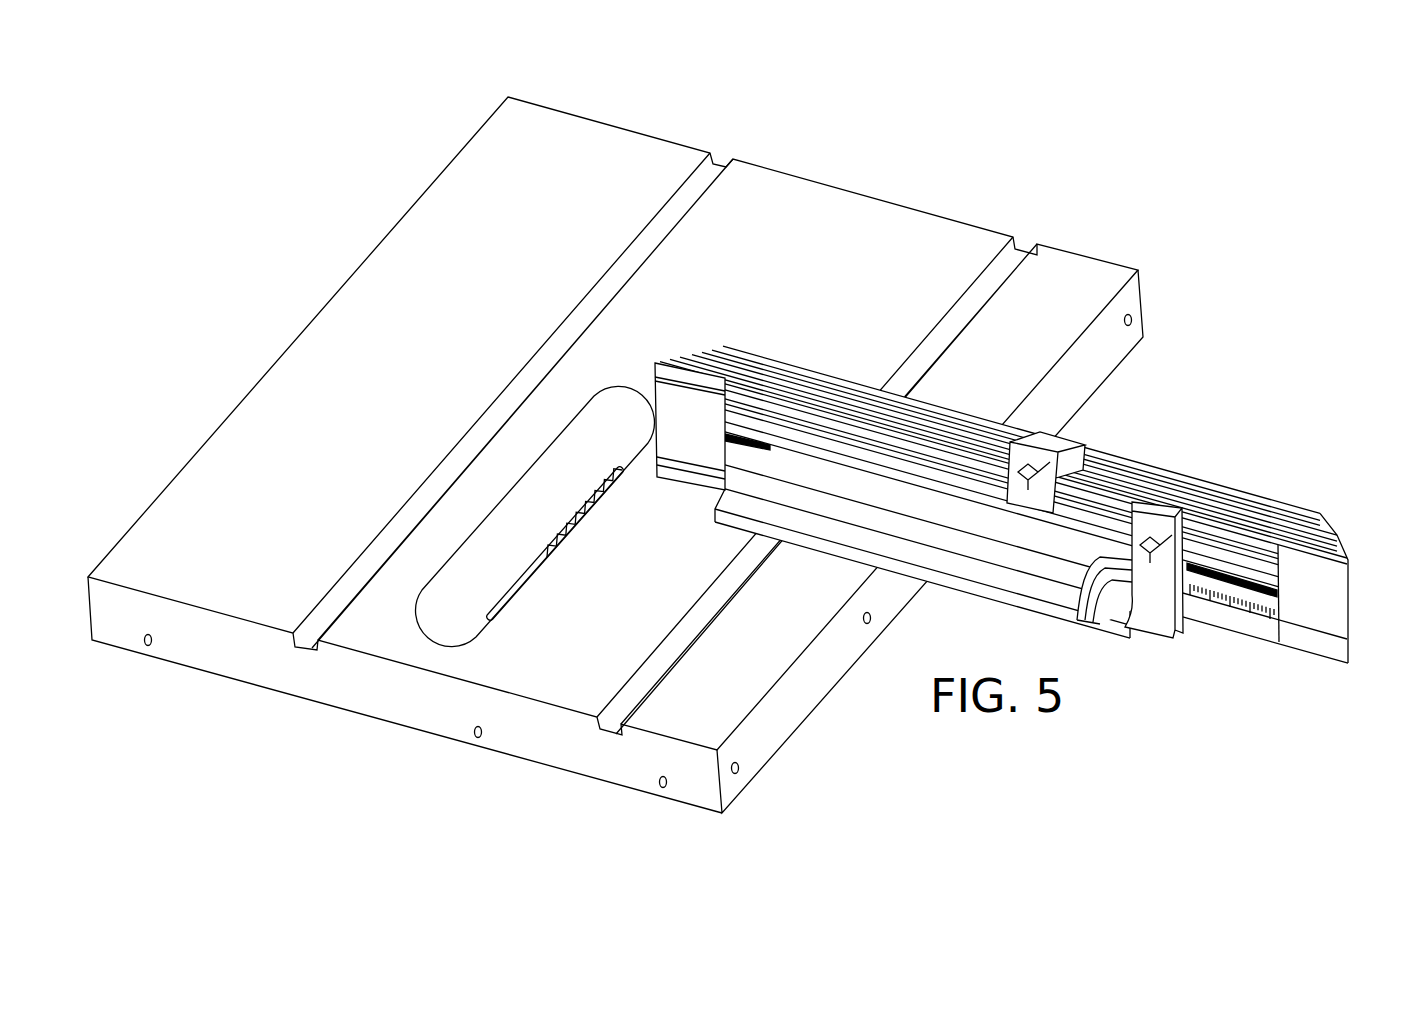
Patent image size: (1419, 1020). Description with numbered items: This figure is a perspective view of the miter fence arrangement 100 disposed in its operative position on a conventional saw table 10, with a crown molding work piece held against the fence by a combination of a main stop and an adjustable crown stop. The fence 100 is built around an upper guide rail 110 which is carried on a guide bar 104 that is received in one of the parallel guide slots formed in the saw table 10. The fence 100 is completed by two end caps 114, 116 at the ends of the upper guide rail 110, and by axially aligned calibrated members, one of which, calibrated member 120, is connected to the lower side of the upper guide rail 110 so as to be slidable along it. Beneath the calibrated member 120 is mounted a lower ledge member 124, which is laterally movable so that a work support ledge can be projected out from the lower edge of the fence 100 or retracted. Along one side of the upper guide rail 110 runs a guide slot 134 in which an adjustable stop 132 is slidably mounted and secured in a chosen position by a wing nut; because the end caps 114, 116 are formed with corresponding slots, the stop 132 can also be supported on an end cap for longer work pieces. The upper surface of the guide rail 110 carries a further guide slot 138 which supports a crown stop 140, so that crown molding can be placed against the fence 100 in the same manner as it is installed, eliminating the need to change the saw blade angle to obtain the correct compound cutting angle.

The saw table 10 is at (433, 201).
The miter fence arrangement 100 is at (1180, 395).
The guide bar 104 is at (607, 731).
The upper guide rail 110 is at (760, 425).
The end cap 114 is at (658, 378).
The end cap 116 is at (1311, 626).
The calibrated member 120 is at (1213, 578).
The ledge member 124 is at (1243, 617).
The adjustable stop 132 is at (1168, 620).
The guide slot 134 is at (935, 460).
The guide slot 138 is at (760, 378).
The crown stop 140 is at (1086, 437).